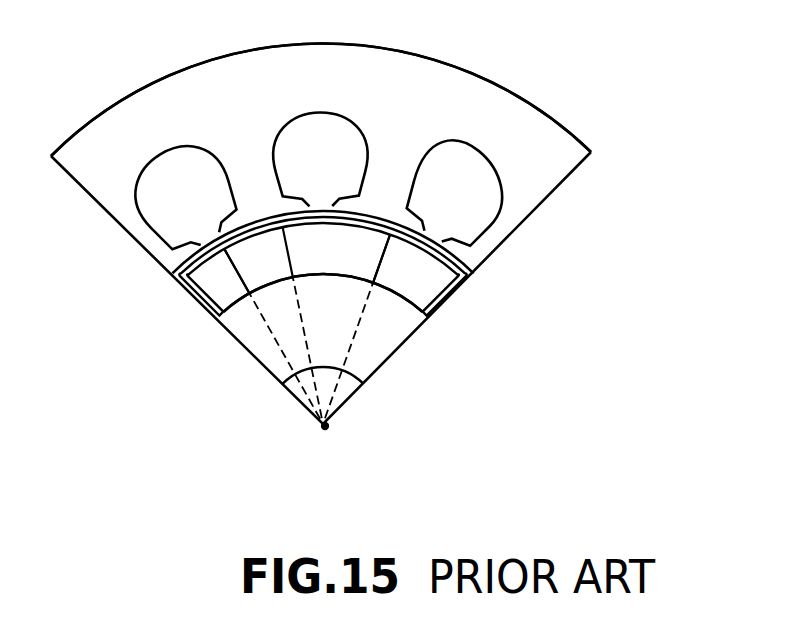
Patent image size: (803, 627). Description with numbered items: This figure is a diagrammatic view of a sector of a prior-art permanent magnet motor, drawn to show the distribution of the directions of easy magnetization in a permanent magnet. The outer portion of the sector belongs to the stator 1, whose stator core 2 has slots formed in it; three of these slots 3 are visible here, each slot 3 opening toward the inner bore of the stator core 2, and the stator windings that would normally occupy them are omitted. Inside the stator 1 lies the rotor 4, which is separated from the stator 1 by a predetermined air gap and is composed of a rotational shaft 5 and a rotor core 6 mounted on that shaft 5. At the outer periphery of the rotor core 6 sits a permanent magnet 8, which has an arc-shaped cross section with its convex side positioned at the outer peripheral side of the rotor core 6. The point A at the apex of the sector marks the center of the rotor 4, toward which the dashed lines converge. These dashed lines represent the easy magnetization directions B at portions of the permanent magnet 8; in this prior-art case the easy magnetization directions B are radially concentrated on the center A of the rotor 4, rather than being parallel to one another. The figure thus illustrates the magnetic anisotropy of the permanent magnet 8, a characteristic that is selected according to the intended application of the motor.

The stator 1 is at (477, 71).
The stator core 2 is at (546, 130).
The slot 3 is at (498, 190).
The rotor 4 is at (244, 356).
The rotational shaft 5 is at (279, 395).
The rotor core 6 is at (397, 337).
The permanent magnet 8 is at (214, 298).
The center of the rotor A is at (321, 430).
The easy magnetization directions B is at (233, 268).